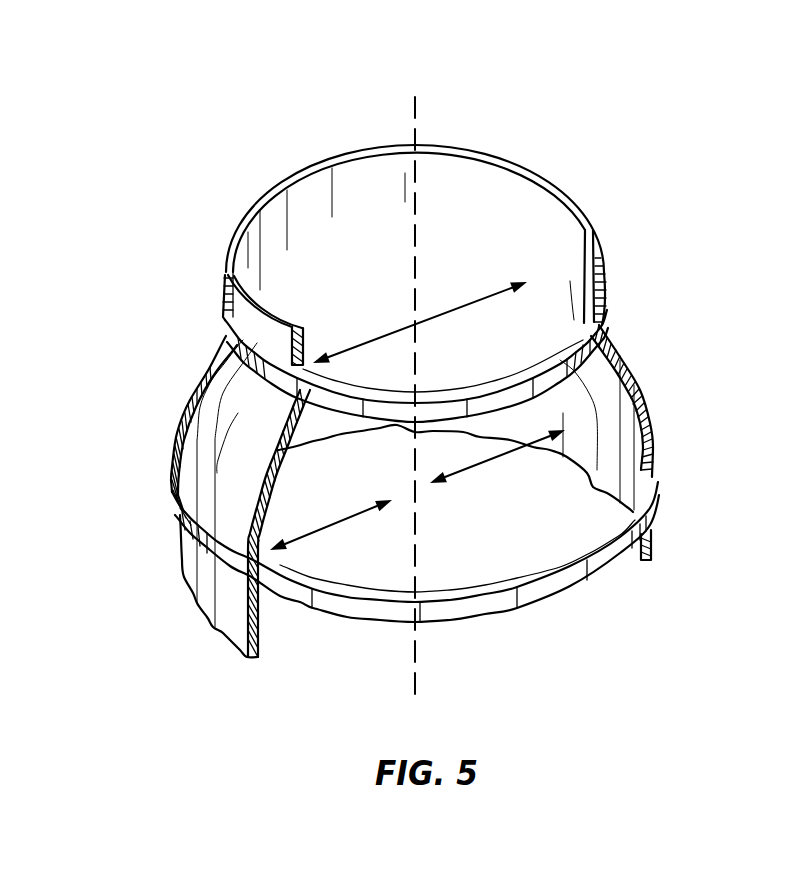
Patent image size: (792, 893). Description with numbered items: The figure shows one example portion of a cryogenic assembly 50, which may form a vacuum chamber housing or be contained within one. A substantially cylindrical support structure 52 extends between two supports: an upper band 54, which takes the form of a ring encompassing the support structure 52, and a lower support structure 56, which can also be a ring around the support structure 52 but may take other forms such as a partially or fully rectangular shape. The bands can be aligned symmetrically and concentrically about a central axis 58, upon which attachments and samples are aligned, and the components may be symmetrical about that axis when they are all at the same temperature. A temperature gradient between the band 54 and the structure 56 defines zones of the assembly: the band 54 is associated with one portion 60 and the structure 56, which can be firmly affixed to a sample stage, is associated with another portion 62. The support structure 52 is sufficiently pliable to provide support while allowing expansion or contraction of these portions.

The cryogenic assembly 50 is at (610, 140).
The support structure 52 is at (630, 372).
The band 54 is at (610, 287).
The support structure 56 is at (660, 453).
The axis 58 is at (418, 107).
The portion 60 is at (197, 215).
The portion 62 is at (158, 397).